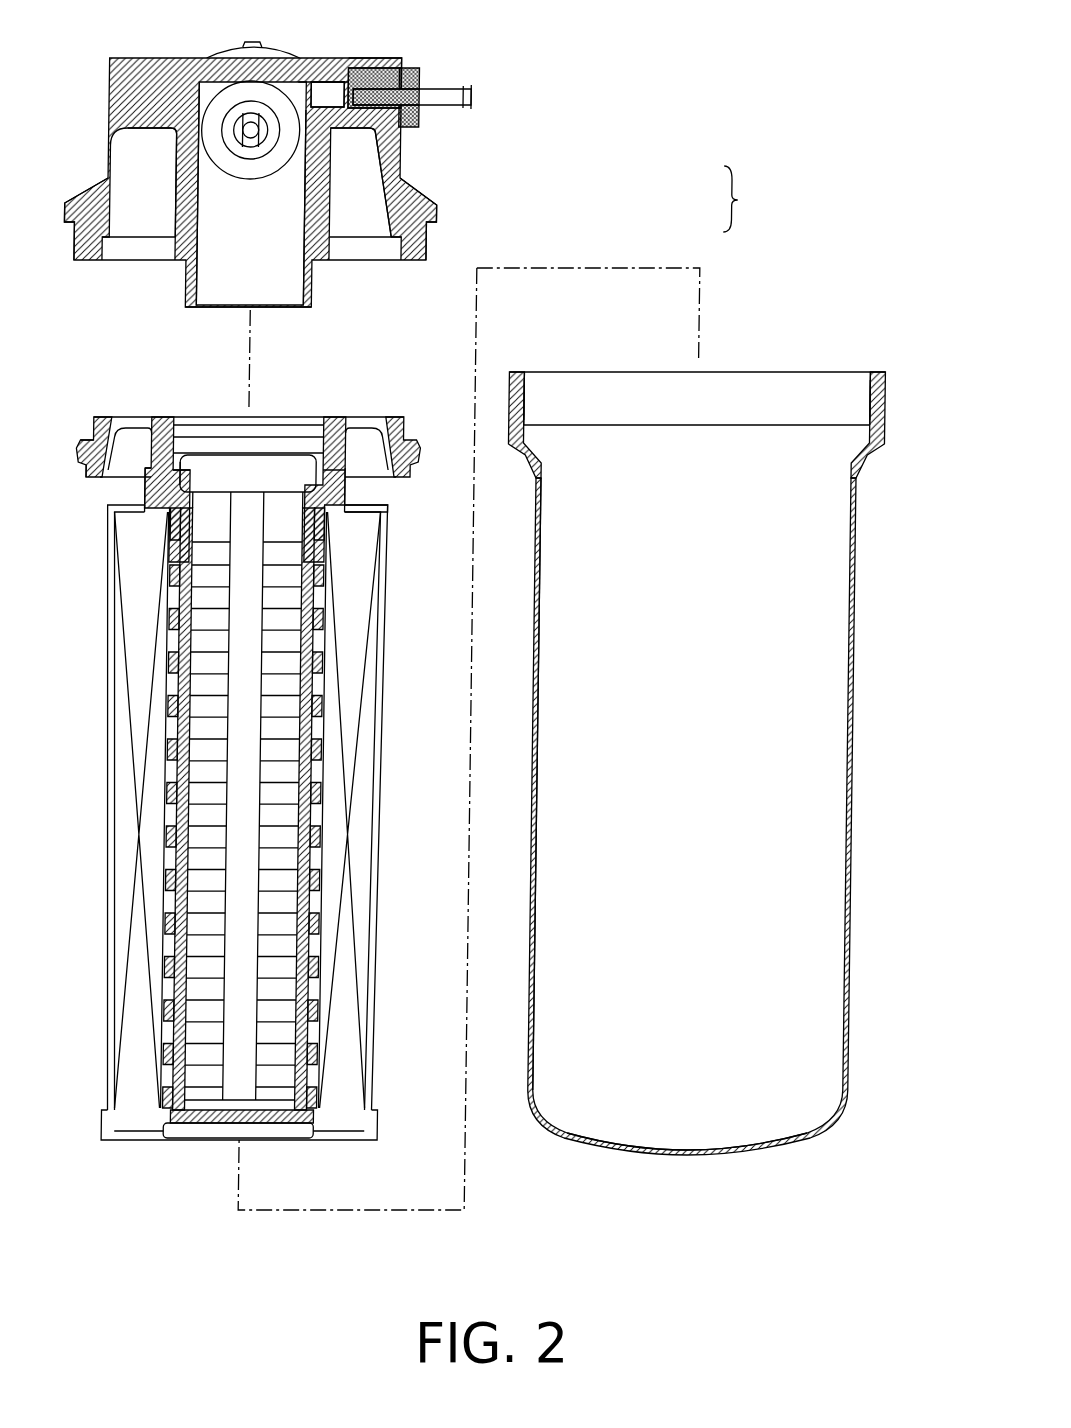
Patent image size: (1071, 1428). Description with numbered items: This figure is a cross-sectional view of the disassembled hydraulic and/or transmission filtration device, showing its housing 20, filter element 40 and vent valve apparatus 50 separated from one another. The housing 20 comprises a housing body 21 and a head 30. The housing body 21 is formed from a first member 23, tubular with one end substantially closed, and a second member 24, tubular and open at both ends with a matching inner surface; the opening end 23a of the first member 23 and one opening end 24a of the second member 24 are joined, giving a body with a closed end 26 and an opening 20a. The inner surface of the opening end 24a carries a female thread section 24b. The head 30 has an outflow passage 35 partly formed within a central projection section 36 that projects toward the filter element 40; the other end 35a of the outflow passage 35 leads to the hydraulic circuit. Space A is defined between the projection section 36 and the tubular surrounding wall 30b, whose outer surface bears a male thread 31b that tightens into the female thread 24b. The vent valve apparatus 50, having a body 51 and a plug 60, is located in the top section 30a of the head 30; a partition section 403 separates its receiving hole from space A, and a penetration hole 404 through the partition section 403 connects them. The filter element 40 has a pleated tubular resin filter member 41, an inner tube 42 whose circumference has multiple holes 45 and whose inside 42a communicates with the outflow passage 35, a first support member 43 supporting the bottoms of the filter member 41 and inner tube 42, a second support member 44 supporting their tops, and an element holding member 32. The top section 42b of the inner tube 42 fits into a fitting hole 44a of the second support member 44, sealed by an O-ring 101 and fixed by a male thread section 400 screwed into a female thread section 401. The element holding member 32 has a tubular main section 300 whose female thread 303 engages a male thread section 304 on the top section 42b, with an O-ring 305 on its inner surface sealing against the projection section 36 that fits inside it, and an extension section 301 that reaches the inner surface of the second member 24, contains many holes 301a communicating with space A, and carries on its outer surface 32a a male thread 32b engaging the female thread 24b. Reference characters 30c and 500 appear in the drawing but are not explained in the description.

The housing 20 is at (746, 199).
The opening of housing body 20a is at (608, 378).
The housing body 21 is at (874, 366).
The first member 23 is at (862, 570).
The opening end of first member 23a is at (670, 446).
The second member 24 is at (883, 436).
The opening end of second member 24a is at (752, 378).
The female thread section 24b is at (528, 398).
The closed end of housing body 26 is at (707, 1157).
The head 30 is at (442, 217).
The top section of head 30a is at (372, 62).
The surrounding wall 30b is at (85, 250).
The passage in head 30c is at (346, 76).
The male thread 31b is at (76, 234).
The element holding member 32 is at (133, 497).
The outer surface of extension section 32a is at (91, 478).
The male thread 32b is at (80, 440).
The outflow passage 35 is at (320, 253).
The other end of outflow passage 35a is at (245, 122).
The projection section 36 is at (187, 291).
The filter element 40 is at (112, 782).
The filter member 41 is at (120, 840).
The inner tube 42 is at (321, 750).
The inside of inner tube 42a is at (247, 836).
The top section of inner tube 42b is at (308, 453).
The first support member 43 is at (146, 1143).
The second support member 44 is at (106, 543).
The fitting hole 44a is at (330, 520).
The holes 45 is at (176, 558).
The vent valve apparatus 50 is at (474, 76).
The body 51 is at (400, 66).
The plug 60 is at (472, 108).
The O-ring 101 is at (350, 503).
The main section 300 is at (341, 443).
The extension section 301 is at (391, 420).
The holes 301a is at (124, 420).
The female thread 303 is at (168, 466).
The male thread section 304 is at (158, 427).
The O-ring 305 is at (329, 440).
The male thread section 400 is at (187, 448).
The female thread section 401 is at (158, 460).
The partition section 403 is at (297, 176).
The penetration hole 404 is at (364, 106).
The seal member 500 is at (86, 437).
The space A is at (142, 157).